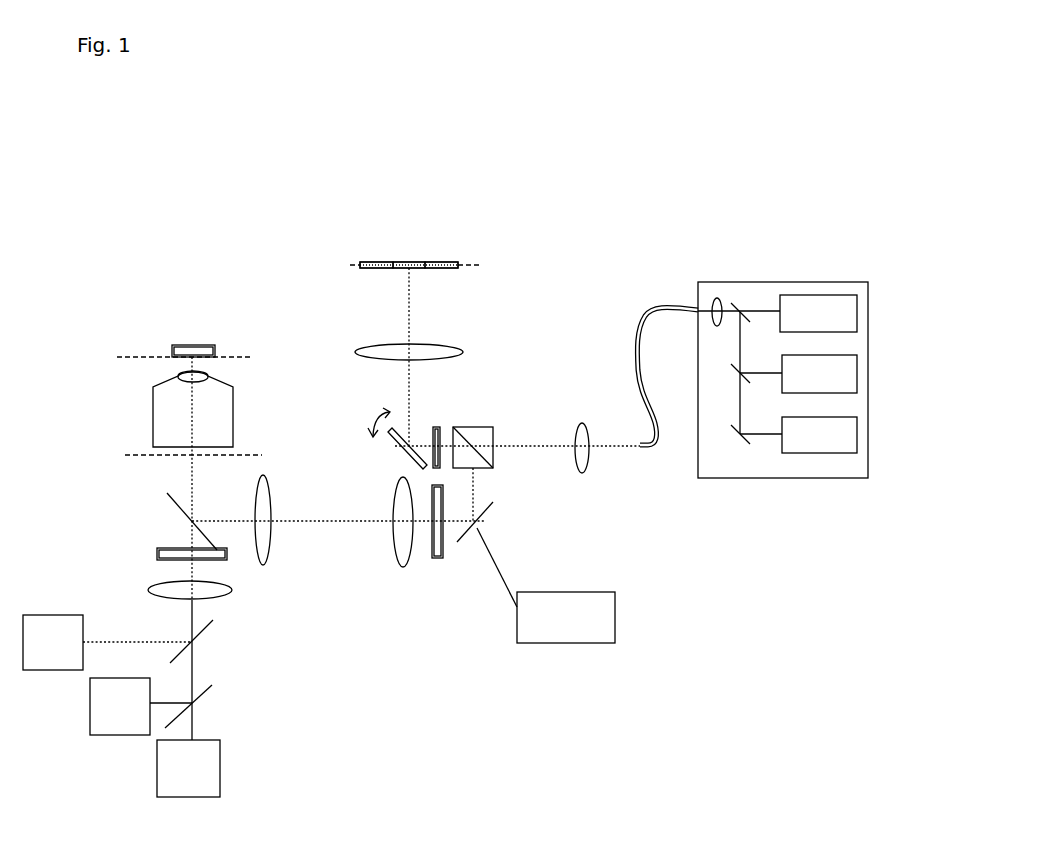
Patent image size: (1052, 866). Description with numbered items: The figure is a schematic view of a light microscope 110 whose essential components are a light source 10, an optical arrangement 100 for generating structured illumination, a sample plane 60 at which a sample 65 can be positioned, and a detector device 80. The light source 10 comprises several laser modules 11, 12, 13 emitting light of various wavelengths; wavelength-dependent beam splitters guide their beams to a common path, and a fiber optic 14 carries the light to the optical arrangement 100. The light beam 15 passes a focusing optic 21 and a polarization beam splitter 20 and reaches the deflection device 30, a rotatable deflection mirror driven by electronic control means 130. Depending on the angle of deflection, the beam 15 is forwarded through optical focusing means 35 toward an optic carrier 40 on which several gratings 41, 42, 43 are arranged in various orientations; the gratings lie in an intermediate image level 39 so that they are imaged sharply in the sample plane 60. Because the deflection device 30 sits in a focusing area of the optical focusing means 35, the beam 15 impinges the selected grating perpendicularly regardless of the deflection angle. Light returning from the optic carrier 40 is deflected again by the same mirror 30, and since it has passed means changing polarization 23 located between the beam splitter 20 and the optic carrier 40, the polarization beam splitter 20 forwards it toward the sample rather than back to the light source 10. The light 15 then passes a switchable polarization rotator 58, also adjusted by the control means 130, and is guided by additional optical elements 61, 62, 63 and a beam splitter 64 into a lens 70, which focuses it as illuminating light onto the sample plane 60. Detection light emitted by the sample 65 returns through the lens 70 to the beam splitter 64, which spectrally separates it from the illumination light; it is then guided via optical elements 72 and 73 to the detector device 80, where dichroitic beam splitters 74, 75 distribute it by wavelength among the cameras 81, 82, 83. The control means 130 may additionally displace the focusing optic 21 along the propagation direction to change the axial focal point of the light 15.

The light source 10 is at (762, 494).
The laser module 11 is at (831, 324).
The laser module 12 is at (832, 384).
The laser module 13 is at (832, 445).
The fiber optic 14 is at (653, 306).
The light beam 15 is at (407, 305).
The beam splitter 20 is at (484, 427).
The focusing optic 21 is at (582, 423).
The means changing polarization 23 is at (436, 427).
The deflection device 30 is at (392, 446).
The optical focusing means 35 is at (445, 345).
The intermediate image level 39 is at (350, 266).
The optic carrier 40 is at (457, 275).
The grating 41 is at (368, 262).
The grating 42 is at (397, 262).
The grating 43 is at (433, 262).
The polarization rotator 58 is at (440, 559).
The sample plane 60 is at (127, 356).
The optical element 61 is at (483, 510).
The optical element 62 is at (405, 563).
The optical element 63 is at (265, 566).
The beam splitter 64 is at (170, 496).
The sample 65 is at (192, 345).
The lens 70 is at (181, 426).
The optical element 72 is at (157, 554).
The optical element 73 is at (150, 589).
The dichroitic beam splitter 74 is at (205, 628).
The dichroitic beam splitter 75 is at (205, 693).
The detector device 80 is at (116, 757).
The camera 81 is at (63, 653).
The camera 82 is at (130, 714).
The camera 83 is at (190, 778).
The optical arrangement 100 is at (396, 650).
The light microscope 110 is at (565, 748).
The electronic control means 130 is at (587, 631).